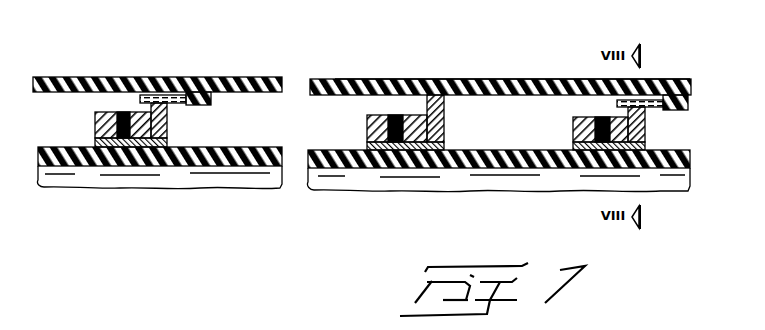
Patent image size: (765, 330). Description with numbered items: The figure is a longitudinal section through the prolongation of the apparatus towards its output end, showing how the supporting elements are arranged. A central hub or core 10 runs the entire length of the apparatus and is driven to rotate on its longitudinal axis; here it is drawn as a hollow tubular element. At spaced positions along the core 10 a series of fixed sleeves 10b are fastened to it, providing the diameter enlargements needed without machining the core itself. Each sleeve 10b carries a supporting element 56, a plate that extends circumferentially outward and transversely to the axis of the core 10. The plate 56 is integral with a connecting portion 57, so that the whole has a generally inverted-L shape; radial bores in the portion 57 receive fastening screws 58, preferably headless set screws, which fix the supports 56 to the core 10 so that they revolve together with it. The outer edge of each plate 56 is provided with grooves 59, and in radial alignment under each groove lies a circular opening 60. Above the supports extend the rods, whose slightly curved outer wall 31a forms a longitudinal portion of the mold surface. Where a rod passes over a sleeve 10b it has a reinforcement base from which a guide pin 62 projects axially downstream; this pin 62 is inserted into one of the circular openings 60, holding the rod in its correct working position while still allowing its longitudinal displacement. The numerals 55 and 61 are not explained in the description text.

The central core 10 is at (207, 154).
The fixed sleeve 10b is at (120, 156).
The curved wall of rod 31a is at (497, 79).
The upper plate 55 is at (445, 79).
The supporting element 56 is at (167, 132).
The connecting portion 57 is at (95, 126).
The fastening screw 58 is at (121, 112).
The groove 59 is at (147, 92).
The circular opening 60 is at (168, 105).
The plate protrusion 61 is at (212, 102).
The guide pin 62 is at (135, 77).